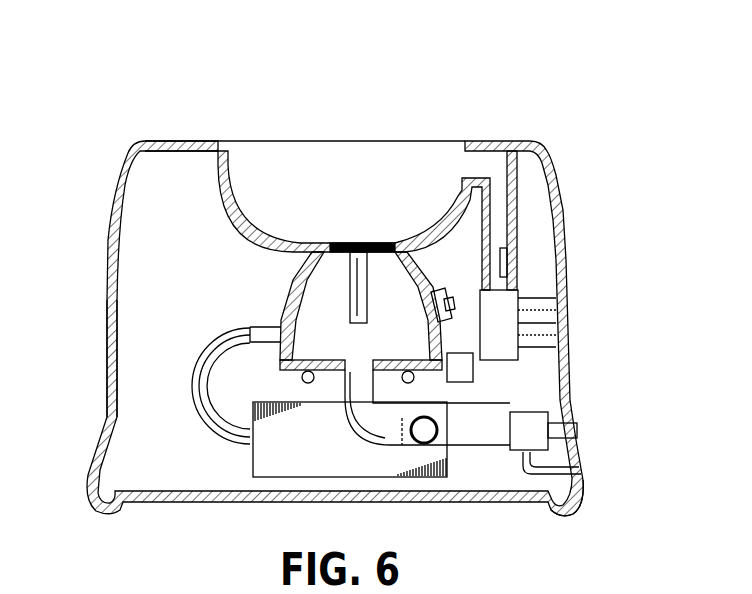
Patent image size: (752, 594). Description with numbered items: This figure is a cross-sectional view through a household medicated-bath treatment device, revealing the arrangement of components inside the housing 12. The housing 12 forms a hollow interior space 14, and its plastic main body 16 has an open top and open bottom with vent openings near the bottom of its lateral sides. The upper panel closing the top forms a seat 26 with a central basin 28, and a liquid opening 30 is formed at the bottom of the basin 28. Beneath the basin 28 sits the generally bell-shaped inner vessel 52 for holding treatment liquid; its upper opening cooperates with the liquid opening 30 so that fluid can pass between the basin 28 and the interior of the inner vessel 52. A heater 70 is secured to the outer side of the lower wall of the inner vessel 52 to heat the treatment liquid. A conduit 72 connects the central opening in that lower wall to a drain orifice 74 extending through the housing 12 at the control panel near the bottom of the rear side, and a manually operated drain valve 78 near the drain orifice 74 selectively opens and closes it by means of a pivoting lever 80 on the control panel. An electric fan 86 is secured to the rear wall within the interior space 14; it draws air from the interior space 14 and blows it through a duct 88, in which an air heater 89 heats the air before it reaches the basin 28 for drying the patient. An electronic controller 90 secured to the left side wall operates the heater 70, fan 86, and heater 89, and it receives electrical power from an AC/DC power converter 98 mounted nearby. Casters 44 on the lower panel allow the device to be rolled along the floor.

The housing 12 is at (106, 238).
The hollow interior space 14 is at (202, 257).
The main body 16 is at (107, 294).
The seat 26 is at (174, 140).
The central basin 28 is at (258, 220).
The liquid opening 30 is at (325, 242).
The rollers or casters 44 is at (564, 518).
The inner container or vessel 52 is at (297, 283).
The heater or heating means 70 is at (303, 379).
The tube or conduit 72 is at (350, 423).
The drain orifice 74 is at (582, 468).
The manually operated drain valve 78 is at (542, 410).
The pivoting lever 80 is at (578, 430).
The electric fan 86 is at (530, 323).
The conduit or duct 88 is at (512, 238).
The heater or air heating means 89 is at (508, 259).
The electronic controller 90 is at (249, 474).
The AC/DC power converter 98 is at (474, 370).